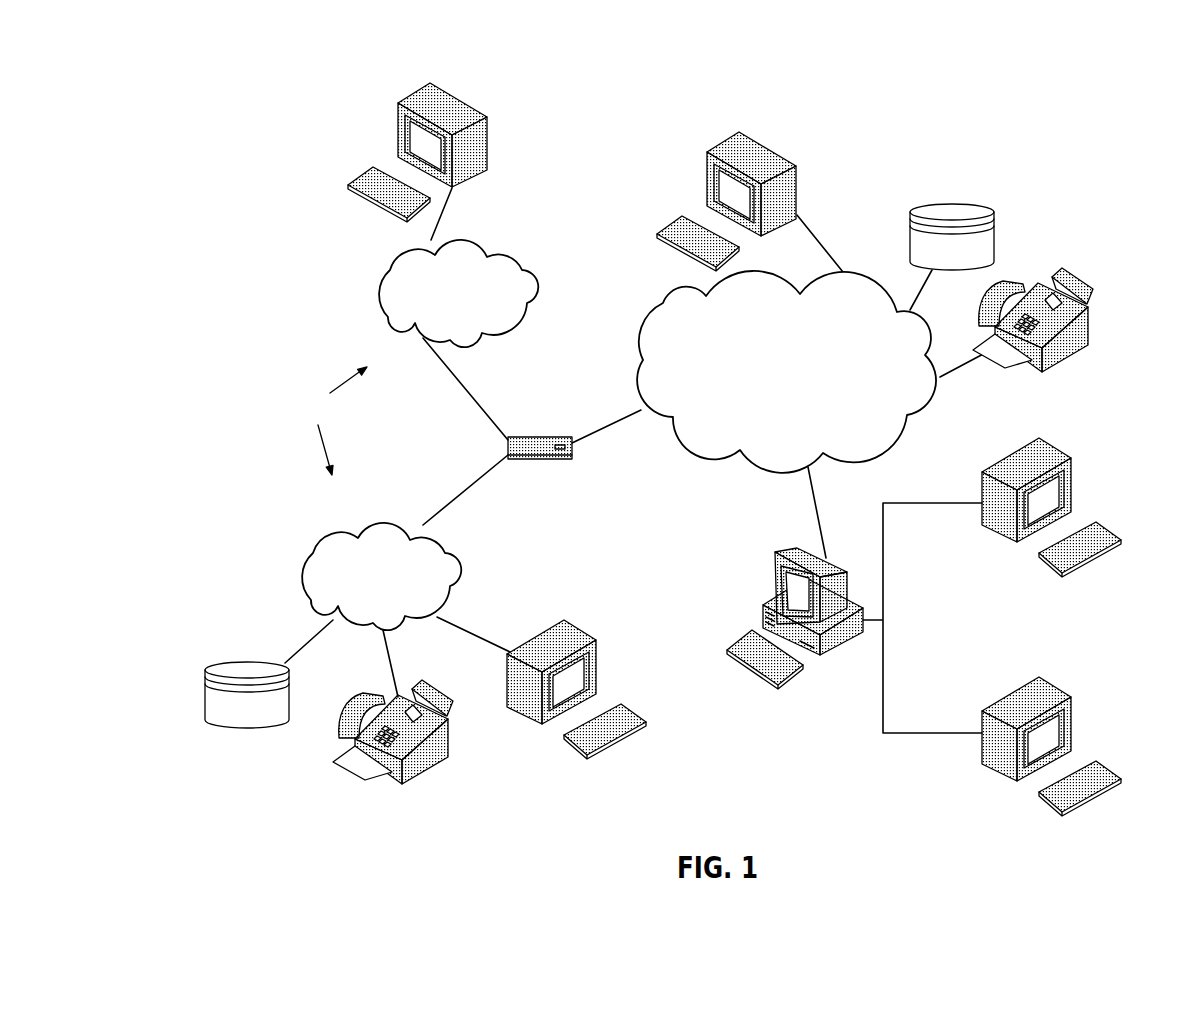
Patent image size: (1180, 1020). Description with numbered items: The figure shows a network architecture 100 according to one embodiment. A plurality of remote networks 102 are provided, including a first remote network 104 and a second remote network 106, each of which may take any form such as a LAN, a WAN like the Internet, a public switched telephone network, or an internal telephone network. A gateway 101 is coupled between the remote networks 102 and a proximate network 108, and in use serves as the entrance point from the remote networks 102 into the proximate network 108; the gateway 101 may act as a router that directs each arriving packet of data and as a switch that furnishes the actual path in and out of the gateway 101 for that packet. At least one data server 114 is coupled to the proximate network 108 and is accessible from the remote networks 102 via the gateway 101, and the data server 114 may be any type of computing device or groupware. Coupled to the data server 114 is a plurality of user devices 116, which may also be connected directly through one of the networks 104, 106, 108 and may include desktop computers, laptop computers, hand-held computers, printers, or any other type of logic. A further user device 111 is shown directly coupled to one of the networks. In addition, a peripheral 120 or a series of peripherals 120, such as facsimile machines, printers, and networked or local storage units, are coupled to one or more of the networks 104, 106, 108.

The architecture 100 is at (720, 55).
The gateway 101 is at (537, 436).
The remote networks 102 is at (331, 421).
The first remote network 104 is at (308, 548).
The second remote network 106 is at (540, 300).
The proximate network 108 is at (910, 426).
The user device 111 is at (800, 198).
The data server 114 is at (773, 577).
The user devices 116 is at (489, 146).
The peripheral 120 is at (945, 204).